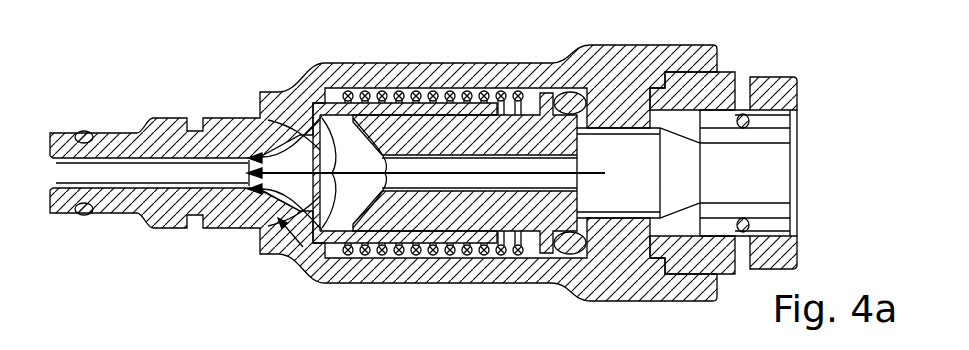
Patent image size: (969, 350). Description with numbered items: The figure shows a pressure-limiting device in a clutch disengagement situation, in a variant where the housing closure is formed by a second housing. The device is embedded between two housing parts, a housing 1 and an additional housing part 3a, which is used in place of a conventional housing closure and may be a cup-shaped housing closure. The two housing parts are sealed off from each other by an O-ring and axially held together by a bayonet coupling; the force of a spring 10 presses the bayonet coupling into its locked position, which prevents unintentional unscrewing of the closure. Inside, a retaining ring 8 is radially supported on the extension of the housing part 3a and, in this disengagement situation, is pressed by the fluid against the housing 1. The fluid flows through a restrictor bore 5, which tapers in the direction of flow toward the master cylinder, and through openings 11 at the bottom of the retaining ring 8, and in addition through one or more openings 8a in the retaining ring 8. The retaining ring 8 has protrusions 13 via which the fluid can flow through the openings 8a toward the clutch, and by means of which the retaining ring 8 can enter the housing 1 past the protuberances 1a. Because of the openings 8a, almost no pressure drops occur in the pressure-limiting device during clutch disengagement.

The housing 1 is at (225, 124).
The protuberances 1a is at (338, 100).
The housing part 3a is at (780, 85).
The restrictor bore 5 is at (256, 240).
The retaining ring 8 is at (443, 243).
The openings 8a is at (382, 243).
The spring 10 is at (378, 91).
The openings 11 is at (292, 120).
The protrusions 13 is at (330, 252).